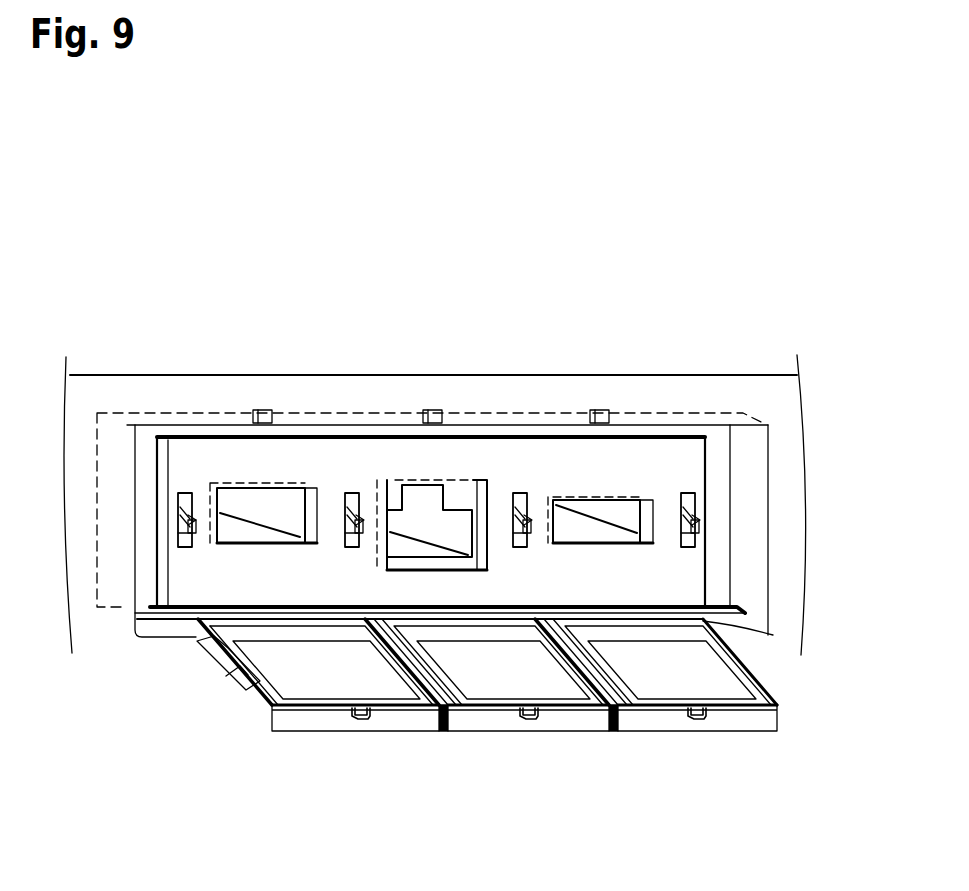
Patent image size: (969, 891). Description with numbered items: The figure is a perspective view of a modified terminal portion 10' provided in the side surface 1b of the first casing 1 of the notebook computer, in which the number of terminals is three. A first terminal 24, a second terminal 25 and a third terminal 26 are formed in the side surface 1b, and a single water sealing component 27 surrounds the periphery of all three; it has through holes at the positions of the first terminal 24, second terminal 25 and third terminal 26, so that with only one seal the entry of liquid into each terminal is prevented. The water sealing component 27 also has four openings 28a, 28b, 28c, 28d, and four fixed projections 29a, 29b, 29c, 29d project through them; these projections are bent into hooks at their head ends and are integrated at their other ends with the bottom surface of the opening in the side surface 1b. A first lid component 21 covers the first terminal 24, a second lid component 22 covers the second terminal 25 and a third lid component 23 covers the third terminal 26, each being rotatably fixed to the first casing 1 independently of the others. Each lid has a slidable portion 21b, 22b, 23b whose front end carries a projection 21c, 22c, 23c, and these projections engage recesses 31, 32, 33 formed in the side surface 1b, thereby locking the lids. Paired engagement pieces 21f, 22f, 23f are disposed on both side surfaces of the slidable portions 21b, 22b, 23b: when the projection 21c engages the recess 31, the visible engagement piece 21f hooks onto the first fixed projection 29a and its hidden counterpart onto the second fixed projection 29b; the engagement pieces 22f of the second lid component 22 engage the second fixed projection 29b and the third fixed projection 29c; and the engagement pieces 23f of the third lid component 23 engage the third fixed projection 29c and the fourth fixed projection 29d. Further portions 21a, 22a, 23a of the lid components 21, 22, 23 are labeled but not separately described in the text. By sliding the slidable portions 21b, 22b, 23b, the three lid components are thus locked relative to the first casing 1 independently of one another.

The terminal portion 10' is at (451, 254).
The first casing 1 is at (113, 373).
The side surface 1b is at (797, 416).
The water sealing component 27 is at (660, 572).
The recess 31 is at (263, 410).
The recess 32 is at (430, 410).
The recess 33 is at (598, 410).
The first terminal 24 is at (278, 502).
The second terminal 25 is at (427, 502).
The third terminal 26 is at (617, 512).
The opening 28a is at (187, 493).
The opening 28b is at (355, 495).
The opening 28c is at (515, 495).
The opening 28d is at (683, 495).
The first fixed projection 29a is at (196, 515).
The second fixed projection 29b is at (368, 515).
The third fixed projection 29c is at (540, 515).
The fourth fixed projection 29d is at (705, 518).
The first lid component 21 is at (370, 824).
The bottom plate of first tray 21a is at (332, 672).
The slidable portion 21b is at (300, 722).
The projection 21c is at (364, 722).
The engagement piece 21f is at (226, 672).
The second lid component 22 is at (541, 824).
The bottom plate of second tray 22a is at (503, 672).
The slidable portion 22b is at (468, 722).
The projection 22c is at (533, 722).
The engagement piece 22f is at (413, 665).
The third lid component 23 is at (708, 824).
The bottom plate of third tray 23a is at (670, 672).
The slidable portion 23b is at (638, 722).
The projection 23c is at (700, 722).
The engagement piece 23f is at (578, 670).